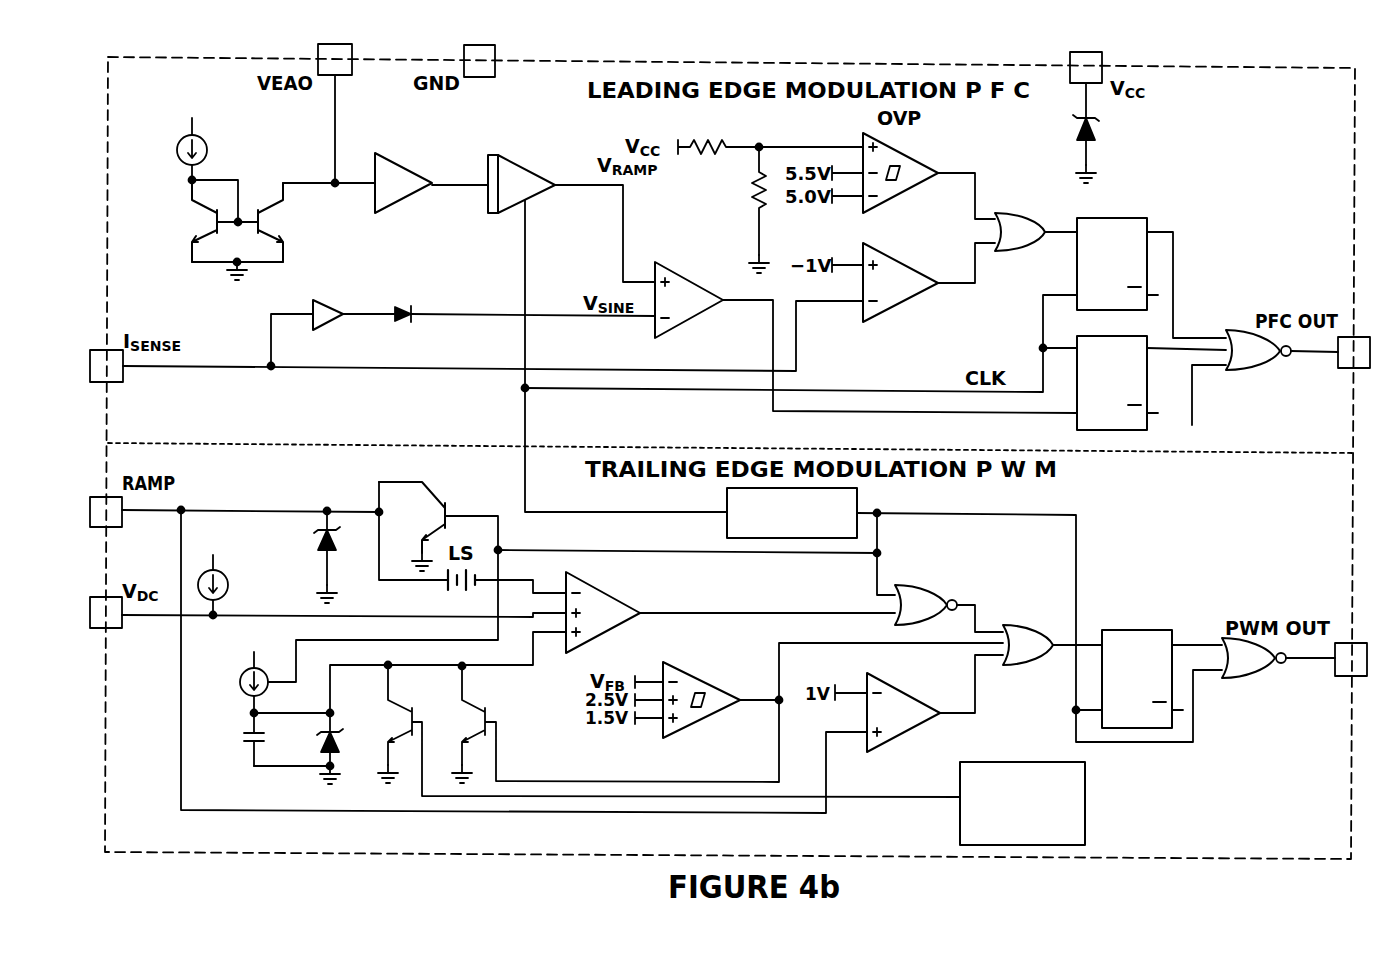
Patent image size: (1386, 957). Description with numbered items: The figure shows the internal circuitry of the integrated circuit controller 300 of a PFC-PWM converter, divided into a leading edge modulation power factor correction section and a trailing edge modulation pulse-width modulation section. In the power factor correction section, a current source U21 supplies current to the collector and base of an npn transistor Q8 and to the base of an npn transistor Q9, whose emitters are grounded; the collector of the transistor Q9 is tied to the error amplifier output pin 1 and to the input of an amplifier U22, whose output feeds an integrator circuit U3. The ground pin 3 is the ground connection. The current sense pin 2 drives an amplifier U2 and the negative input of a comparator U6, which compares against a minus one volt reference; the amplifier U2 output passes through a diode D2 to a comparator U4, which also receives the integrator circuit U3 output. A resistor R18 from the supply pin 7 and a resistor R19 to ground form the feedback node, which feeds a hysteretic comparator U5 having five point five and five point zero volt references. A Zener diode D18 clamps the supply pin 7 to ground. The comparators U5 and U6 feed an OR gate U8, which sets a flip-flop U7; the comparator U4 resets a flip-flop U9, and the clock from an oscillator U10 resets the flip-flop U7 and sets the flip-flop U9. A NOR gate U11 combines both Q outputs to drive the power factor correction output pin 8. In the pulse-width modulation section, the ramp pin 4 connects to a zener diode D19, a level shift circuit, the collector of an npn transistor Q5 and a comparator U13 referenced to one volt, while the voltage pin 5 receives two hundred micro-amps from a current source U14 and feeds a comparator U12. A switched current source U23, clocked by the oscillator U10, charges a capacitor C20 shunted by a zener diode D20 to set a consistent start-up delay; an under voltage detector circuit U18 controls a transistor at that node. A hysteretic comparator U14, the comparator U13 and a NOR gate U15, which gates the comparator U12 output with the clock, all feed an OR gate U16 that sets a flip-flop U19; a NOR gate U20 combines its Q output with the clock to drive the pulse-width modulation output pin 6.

The integrated circuit controller 300 is at (780, 56).
The pin 1 is at (335, 113).
The pin 2 is at (106, 366).
The pin 3 is at (479, 61).
The pin 4 is at (106, 512).
The pin 5 is at (106, 612).
The pin 6 is at (1351, 659).
The pin 7 is at (1086, 67).
The pin 8 is at (1354, 352).
The current source U21 is at (213, 149).
The npn transistor Q8 is at (190, 221).
The npn transistor Q9 is at (285, 222).
The amplifier U22 is at (406, 174).
The integrator circuit U3 is at (528, 184).
The amplifier U2 is at (327, 301).
The diode D2 is at (407, 297).
The resistor R18 is at (718, 134).
The resistor R19 is at (738, 201).
The hysteretic comparator U5 is at (906, 172).
The comparator U6 is at (907, 282).
The comparator U4 is at (689, 291).
The OR gate U8 is at (1020, 232).
The flip-flop U7 is at (1117, 264).
The flip-flop U9 is at (1117, 383).
The NOR gate U11 is at (1258, 363).
The Zener diode D18 is at (1110, 124).
The npn bipolar transistor Q5 is at (424, 516).
The zener diode D19 is at (304, 548).
The current source / hysteretic comparator U14 is at (472, 644).
The switched current source U23 is at (233, 676).
The capacitor C20 is at (232, 739).
The zener diode D20 is at (309, 739).
The comparator U12 is at (613, 611).
The comparator U13 is at (907, 707).
The oscillator U10 is at (792, 513).
The NOR gate U15 is at (926, 587).
The OR gate U16 is at (1028, 659).
The flip-flop U19 is at (1142, 679).
The NOR gate U20 is at (1254, 672).
The under voltage detector circuit U18 is at (1022, 789).